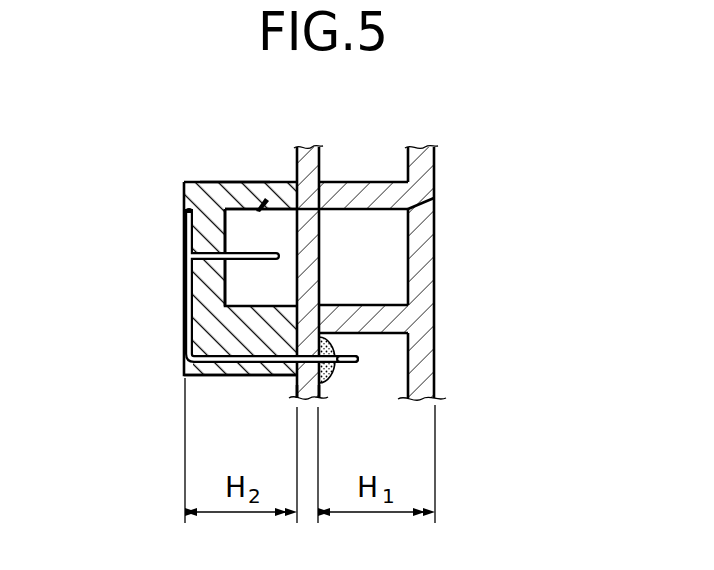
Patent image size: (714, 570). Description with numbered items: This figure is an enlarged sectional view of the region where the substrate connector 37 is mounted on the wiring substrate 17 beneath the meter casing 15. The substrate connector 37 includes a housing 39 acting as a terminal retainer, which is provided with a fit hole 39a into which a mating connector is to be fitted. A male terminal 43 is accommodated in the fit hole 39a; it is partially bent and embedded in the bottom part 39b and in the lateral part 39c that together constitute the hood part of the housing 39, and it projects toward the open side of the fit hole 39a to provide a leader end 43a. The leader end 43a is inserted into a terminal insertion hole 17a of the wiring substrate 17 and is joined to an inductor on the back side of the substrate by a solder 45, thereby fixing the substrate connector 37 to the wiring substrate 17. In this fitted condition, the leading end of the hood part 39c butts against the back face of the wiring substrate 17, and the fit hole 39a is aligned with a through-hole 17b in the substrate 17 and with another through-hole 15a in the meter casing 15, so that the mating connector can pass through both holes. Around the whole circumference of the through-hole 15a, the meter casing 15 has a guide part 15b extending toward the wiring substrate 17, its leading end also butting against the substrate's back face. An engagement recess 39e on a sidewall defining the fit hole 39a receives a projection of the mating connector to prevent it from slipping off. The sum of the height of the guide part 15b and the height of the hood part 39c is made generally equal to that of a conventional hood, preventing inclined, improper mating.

The meter casing 15 is at (437, 147).
The through-hole 15a is at (435, 213).
The guide part 15b is at (388, 182).
The wiring substrate 17 is at (320, 156).
The terminal insertion hole 17a is at (324, 382).
The through-hole 17b is at (263, 207).
The substrate connector 37 is at (232, 172).
The housing 39 is at (210, 181).
The fit hole 39a is at (204, 240).
The bottom part 39b is at (189, 254).
The lateral part 39c is at (230, 378).
The engagement recess 39e is at (222, 207).
The male terminal 43 is at (192, 278).
The leader end 43a is at (358, 365).
The solder 45 is at (334, 345).